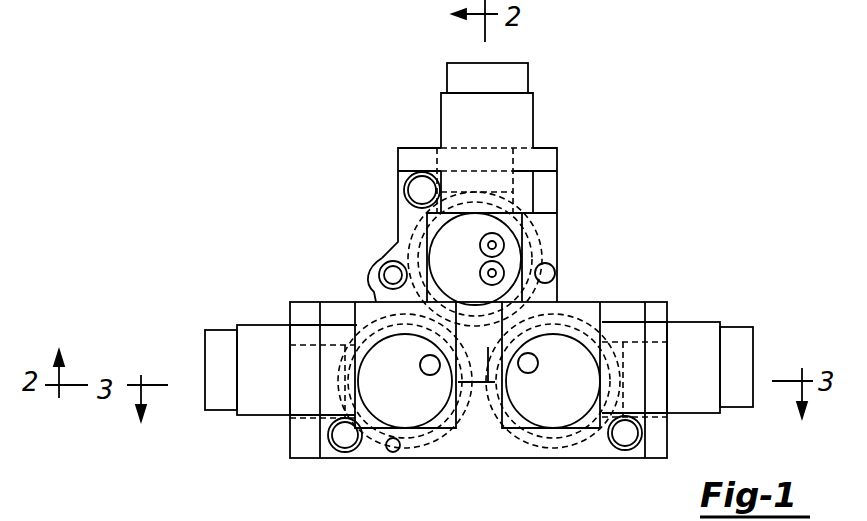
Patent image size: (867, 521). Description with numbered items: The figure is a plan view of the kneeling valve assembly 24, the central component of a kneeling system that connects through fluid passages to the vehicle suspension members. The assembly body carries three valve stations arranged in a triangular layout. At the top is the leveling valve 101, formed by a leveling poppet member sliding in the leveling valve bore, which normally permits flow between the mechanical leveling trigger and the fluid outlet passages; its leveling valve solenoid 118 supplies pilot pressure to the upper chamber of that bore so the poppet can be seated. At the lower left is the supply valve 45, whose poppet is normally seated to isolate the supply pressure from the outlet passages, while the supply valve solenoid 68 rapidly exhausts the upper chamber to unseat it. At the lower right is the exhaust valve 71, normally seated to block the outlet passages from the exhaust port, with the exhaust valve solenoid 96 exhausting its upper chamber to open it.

The kneeling valve assembly 24 is at (680, 199).
The leveling valve 101 is at (552, 242).
The leveling valve solenoid 118 is at (445, 260).
The supply valve 45 is at (360, 326).
The supply valve solenoid 68 is at (407, 400).
The exhaust valve 71 is at (592, 315).
The exhaust valve solenoid 96 is at (545, 403).